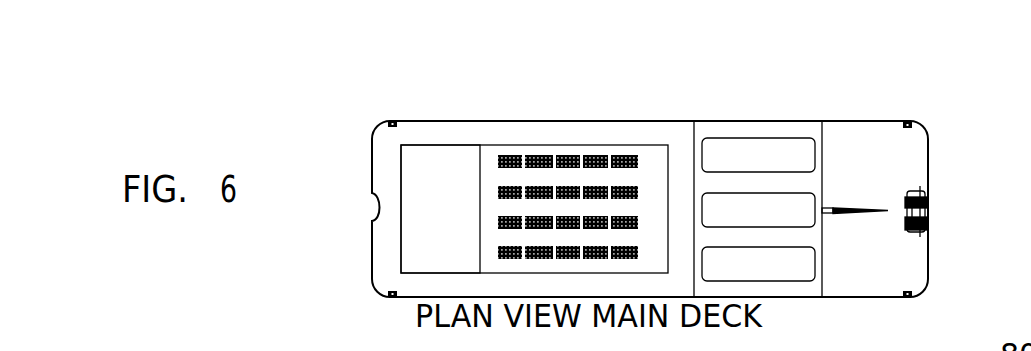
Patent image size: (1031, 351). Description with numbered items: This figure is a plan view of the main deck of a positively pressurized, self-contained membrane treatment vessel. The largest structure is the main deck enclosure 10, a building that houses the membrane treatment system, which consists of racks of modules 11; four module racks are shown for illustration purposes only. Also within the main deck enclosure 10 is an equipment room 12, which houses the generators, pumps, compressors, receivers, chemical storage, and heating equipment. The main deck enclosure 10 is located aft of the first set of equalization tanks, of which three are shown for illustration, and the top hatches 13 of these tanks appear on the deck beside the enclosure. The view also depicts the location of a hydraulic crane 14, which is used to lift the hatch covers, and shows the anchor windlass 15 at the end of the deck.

The main deck enclosure 10 is at (521, 145).
The racks of modules 11 is at (560, 155).
The equipment room 12 is at (435, 187).
The top hatches 13 is at (735, 210).
The hydraulic crane 14 is at (852, 209).
The anchor windlass 15 is at (920, 232).